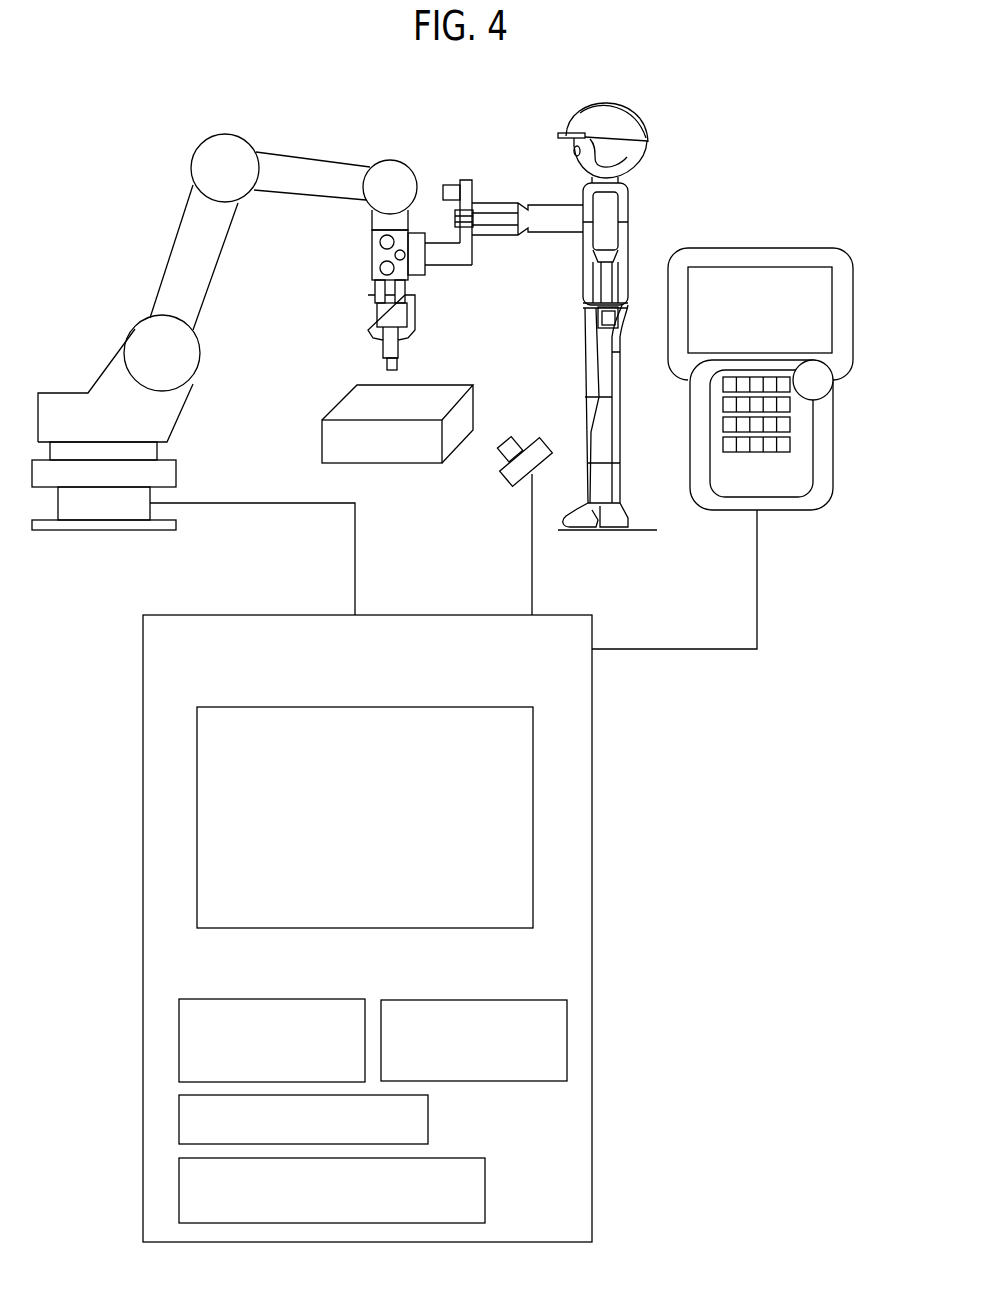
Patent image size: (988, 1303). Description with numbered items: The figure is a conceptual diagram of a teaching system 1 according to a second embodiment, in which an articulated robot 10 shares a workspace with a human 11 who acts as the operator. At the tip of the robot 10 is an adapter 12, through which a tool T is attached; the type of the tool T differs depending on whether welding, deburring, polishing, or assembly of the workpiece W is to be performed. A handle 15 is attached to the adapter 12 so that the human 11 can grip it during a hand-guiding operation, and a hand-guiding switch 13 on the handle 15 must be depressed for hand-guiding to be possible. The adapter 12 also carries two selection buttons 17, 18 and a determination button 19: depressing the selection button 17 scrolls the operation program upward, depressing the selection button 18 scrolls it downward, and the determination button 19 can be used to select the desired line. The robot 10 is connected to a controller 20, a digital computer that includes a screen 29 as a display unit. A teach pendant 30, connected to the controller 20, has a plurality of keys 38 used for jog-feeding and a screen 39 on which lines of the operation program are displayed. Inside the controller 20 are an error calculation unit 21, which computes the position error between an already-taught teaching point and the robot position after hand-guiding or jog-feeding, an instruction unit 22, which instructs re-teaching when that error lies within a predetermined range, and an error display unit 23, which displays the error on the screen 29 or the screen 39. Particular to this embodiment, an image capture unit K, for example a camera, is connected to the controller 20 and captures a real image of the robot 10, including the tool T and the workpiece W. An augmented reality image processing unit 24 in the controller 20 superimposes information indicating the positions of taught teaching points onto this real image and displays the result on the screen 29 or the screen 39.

The teaching system 1 is at (698, 180).
The robot 10 is at (146, 116).
The human 11 is at (616, 124).
The adapter 12 is at (371, 253).
The hand-guiding switch 13 is at (452, 183).
The handle 15 is at (474, 190).
The selection button 17 is at (373, 234).
The selection button 18 is at (372, 268).
The determination button 19 is at (409, 260).
The tool T is at (398, 363).
The workpiece W is at (425, 452).
The image capture unit K is at (536, 438).
The controller 20 is at (592, 780).
The error calculation unit 21 is at (313, 999).
The instruction unit 22 is at (527, 1000).
The error display unit 23 is at (428, 1113).
The augmented reality image processing unit 24 is at (485, 1178).
The screen 29 is at (493, 853).
The teach pendant 30 is at (866, 274).
The keys 38 is at (803, 425).
The screen 39 is at (780, 282).